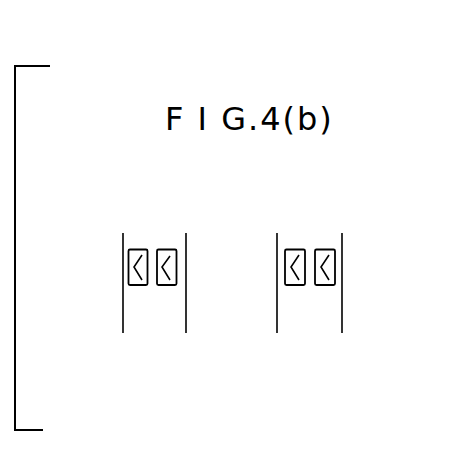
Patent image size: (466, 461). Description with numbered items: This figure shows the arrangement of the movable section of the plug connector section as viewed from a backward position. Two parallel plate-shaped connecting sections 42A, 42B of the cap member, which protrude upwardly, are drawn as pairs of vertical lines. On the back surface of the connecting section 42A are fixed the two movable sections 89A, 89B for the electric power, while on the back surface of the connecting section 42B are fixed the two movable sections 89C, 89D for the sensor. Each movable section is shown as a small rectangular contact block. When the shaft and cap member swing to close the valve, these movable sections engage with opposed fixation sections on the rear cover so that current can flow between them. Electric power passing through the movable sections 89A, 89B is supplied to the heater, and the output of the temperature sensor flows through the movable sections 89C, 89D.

The connecting section 42A is at (128, 318).
The connecting section 42B is at (332, 317).
The movable section for the electric power 89A is at (133, 272).
The movable section for the electric power 89B is at (172, 266).
The movable section for the sensor 89C is at (289, 278).
The movable section for the sensor 89D is at (330, 268).